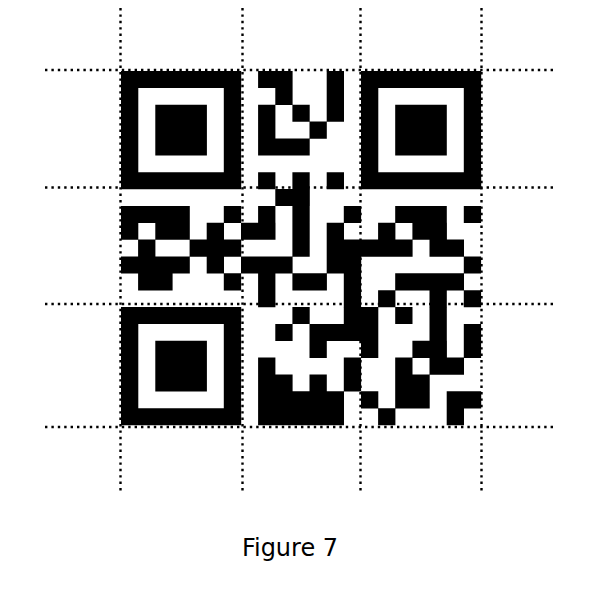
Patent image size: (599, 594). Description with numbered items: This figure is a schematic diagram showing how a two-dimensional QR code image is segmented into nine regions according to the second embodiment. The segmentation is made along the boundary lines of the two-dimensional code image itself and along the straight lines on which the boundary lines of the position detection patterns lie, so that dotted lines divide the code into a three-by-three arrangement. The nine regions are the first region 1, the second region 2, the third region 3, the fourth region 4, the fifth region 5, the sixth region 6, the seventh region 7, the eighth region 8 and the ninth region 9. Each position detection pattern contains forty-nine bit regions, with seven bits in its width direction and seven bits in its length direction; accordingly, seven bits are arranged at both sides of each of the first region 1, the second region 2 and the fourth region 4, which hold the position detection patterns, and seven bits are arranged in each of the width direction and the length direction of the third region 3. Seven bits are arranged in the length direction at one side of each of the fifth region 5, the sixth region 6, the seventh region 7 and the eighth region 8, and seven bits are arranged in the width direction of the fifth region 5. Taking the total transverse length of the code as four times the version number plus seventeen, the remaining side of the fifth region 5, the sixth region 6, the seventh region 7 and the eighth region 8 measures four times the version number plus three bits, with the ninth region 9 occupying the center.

The first region 1 is at (153, 157).
The second region 2 is at (153, 396).
The third region 3 is at (462, 382).
The fourth region 4 is at (453, 140).
The fifth region 5 is at (300, 85).
The sixth region 6 is at (135, 289).
The seventh region 7 is at (290, 365).
The eighth region 8 is at (468, 234).
The ninth region 9 is at (313, 262).